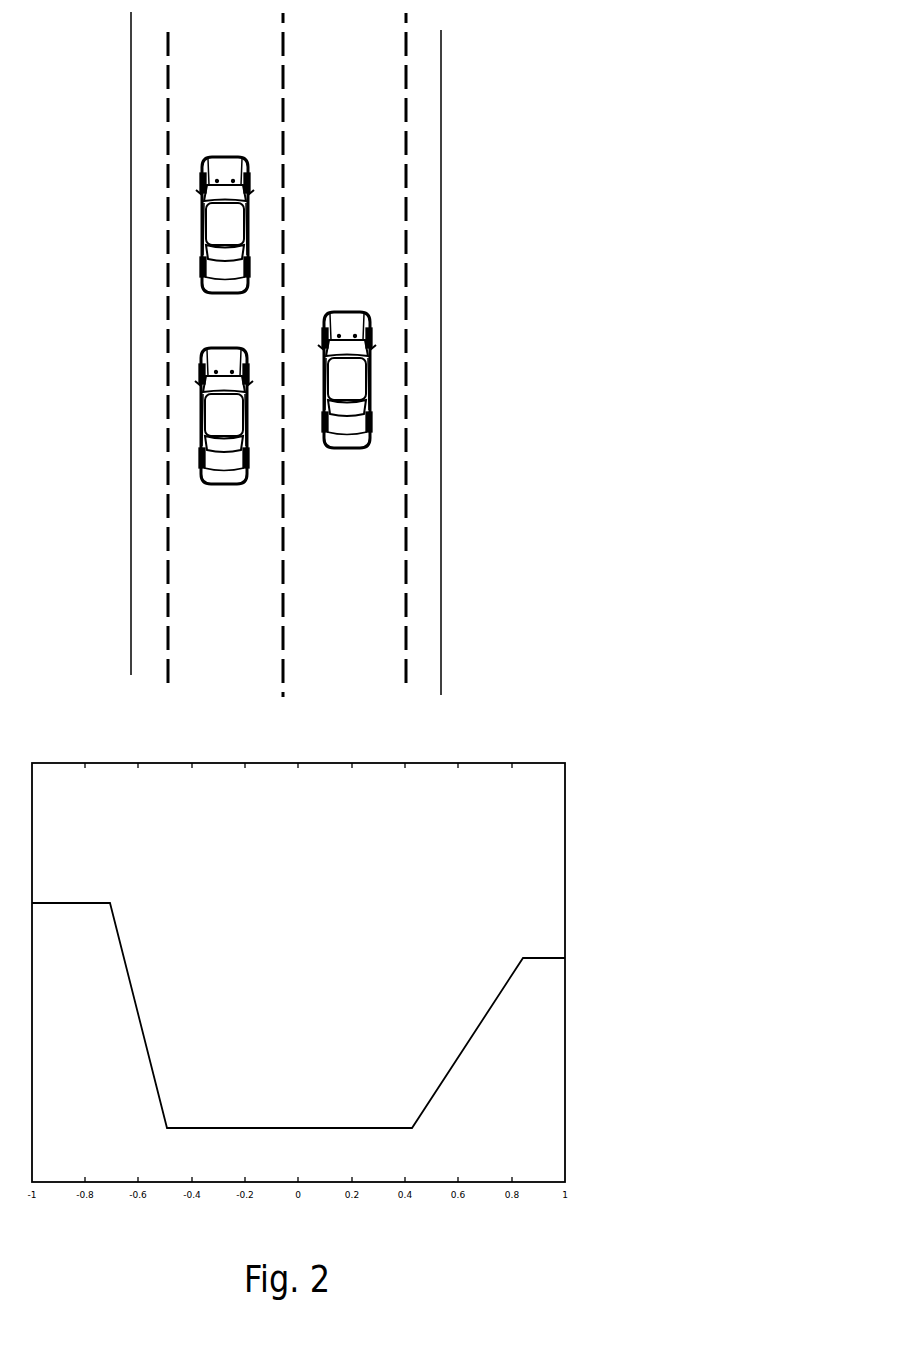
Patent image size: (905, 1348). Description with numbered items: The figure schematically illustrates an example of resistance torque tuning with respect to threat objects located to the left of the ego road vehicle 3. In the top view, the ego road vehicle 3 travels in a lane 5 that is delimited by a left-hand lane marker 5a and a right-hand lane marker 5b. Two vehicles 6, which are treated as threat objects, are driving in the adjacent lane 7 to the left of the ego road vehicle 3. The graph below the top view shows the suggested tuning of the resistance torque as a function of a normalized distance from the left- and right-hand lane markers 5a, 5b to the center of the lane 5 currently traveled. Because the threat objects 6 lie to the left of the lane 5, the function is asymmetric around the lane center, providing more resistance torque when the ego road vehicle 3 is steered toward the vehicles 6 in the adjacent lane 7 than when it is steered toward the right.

The ego road vehicle 3 is at (347, 380).
The lane currently traveled 5 is at (339, 241).
The left-hand lane marker 5a is at (283, 77).
The right-hand lane marker 5b is at (406, 107).
The vehicle driving in adjacent lane 6 is at (224, 320).
The adjacent lane 7 is at (217, 101).